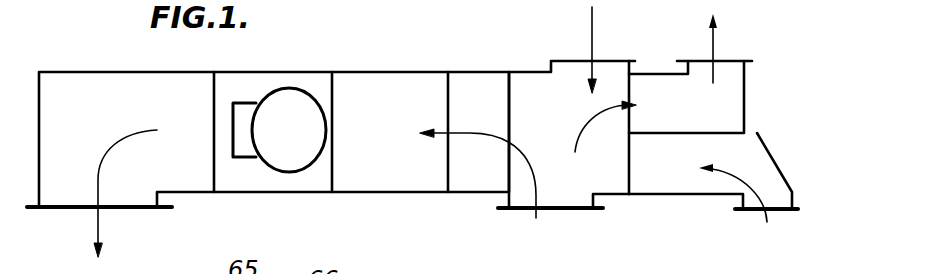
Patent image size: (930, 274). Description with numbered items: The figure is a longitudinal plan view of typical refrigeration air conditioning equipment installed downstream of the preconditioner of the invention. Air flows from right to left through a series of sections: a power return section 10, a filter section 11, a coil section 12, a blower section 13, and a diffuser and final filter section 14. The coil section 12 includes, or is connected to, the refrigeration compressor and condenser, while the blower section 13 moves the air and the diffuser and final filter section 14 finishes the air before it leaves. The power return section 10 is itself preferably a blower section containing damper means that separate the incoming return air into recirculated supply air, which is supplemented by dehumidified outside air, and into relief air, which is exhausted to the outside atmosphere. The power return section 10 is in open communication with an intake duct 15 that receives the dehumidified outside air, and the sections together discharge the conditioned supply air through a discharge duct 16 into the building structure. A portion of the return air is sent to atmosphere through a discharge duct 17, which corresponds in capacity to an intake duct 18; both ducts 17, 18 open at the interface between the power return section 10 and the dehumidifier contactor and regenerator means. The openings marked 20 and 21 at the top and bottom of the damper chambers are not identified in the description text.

The power return section 10 is at (528, 78).
The filter section 11 is at (472, 82).
The coil section 12 is at (406, 82).
The blower section 13 is at (293, 80).
The diffuser and final filter section 14 is at (132, 88).
The intake duct 15 is at (630, 168).
The discharge duct 16 is at (75, 208).
The discharge duct 17 is at (713, 99).
The intake duct 18 is at (714, 150).
The outside air intake 20 is at (733, 60).
The exhaust air outlet 21 is at (753, 213).